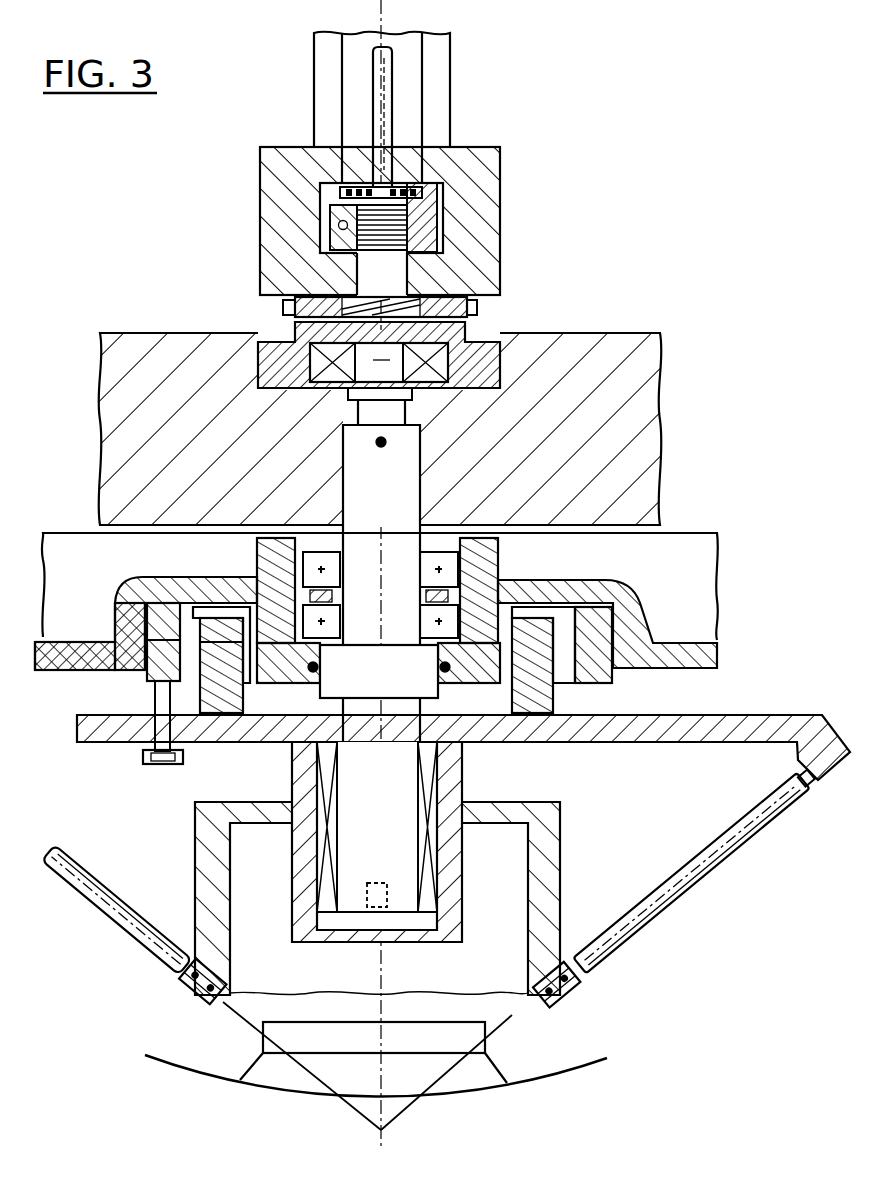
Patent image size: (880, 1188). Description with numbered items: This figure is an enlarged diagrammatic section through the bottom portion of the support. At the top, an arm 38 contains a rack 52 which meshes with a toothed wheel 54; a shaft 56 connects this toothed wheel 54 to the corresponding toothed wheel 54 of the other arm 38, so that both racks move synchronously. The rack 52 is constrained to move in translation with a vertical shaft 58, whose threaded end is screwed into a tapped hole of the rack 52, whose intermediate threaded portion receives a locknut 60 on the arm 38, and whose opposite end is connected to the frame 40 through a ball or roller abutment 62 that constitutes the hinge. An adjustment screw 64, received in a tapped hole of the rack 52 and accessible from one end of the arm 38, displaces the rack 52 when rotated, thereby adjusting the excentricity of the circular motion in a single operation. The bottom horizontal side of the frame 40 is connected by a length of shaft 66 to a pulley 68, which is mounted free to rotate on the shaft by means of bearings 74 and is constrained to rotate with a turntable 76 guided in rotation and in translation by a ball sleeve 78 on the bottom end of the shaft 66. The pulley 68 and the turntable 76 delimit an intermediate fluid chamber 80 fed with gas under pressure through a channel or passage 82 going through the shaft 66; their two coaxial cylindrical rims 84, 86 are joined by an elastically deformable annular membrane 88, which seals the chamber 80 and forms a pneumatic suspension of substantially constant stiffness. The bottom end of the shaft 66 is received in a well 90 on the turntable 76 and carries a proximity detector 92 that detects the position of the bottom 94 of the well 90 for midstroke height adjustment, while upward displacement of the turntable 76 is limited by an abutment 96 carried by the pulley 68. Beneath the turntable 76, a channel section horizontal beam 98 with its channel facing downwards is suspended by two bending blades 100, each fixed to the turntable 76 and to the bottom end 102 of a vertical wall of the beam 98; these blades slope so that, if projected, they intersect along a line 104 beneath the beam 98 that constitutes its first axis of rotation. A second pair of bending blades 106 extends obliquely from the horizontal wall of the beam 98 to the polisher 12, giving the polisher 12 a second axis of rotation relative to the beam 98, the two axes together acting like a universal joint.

The polisher 12 is at (505, 1072).
The arm 38 is at (492, 223).
The frame 40 is at (633, 333).
The rack 52 is at (495, 185).
The toothed wheel 54 is at (450, 145).
The shaft 56 is at (383, 88).
The vertical shaft 58 is at (407, 275).
The locknut 60 is at (475, 307).
The ball or roller abutment 62 is at (277, 347).
The adjustment screw 64 is at (320, 227).
The length of shaft 66 is at (398, 503).
The pulley 68 is at (633, 598).
The bearings 74 is at (453, 578).
The turntable 76 is at (805, 713).
The ball sleeve 78 is at (437, 790).
The intermediate fluid chamber 80 is at (518, 703).
The channel or passage 82 is at (382, 693).
The cylindrical rim 84 is at (122, 603).
The cylindrical rim 86 is at (200, 693).
The elastically deformable annular membrane 88 is at (196, 605).
The well 90 is at (292, 895).
The proximity detector 92 is at (387, 885).
The bottom of the well 94 is at (383, 943).
The abutment 96 is at (165, 765).
The channel section horizontal beam 98 is at (553, 873).
The bending blades 100 is at (110, 920).
The bottom end of a vertical wall of the beam 102 is at (190, 995).
The line 104 is at (383, 1130).
The bending blades 106 is at (225, 832).